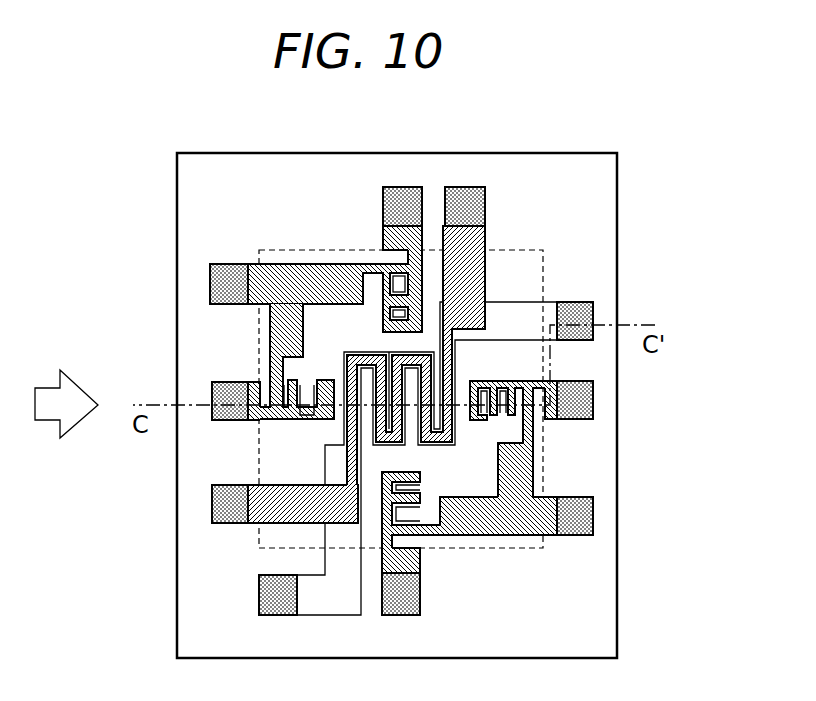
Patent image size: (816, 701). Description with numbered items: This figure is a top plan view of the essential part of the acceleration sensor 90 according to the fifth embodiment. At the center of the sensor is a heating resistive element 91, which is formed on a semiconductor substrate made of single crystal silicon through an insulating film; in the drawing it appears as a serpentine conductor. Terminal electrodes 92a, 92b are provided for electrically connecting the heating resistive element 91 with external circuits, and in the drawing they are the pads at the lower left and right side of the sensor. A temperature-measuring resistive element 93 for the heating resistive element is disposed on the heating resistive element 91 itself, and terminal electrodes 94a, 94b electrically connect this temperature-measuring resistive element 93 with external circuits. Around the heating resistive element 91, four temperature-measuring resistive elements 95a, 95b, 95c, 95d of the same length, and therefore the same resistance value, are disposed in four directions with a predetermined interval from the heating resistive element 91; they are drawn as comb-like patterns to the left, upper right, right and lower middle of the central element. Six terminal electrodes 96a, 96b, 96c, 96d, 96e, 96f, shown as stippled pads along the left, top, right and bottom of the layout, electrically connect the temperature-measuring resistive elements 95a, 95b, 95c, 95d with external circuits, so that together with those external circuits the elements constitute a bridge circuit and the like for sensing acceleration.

The acceleration sensor 90 is at (297, 153).
The heating resistive element 91 is at (347, 418).
The pixel electrode pad 92a is at (259, 596).
The pixel electrode pad 92b is at (593, 306).
The temperature-measuring resistive element for a heating resistive element 93 is at (453, 360).
The terminal electrode 94a is at (212, 505).
The terminal electrode 94b is at (472, 187).
The temperature-measuring resistive element 95a is at (288, 392).
The temperature-measuring resistive element 95b is at (388, 290).
The temperature-measuring resistive element 95c is at (508, 422).
The temperature-measuring resistive element 95d is at (420, 510).
The terminal electrode 96a is at (212, 384).
The terminal electrode 96b is at (212, 270).
The terminal electrode 96c is at (405, 187).
The terminal electrode 96d is at (593, 396).
The terminal electrode 96e is at (593, 515).
The terminal electrode 96f is at (420, 601).